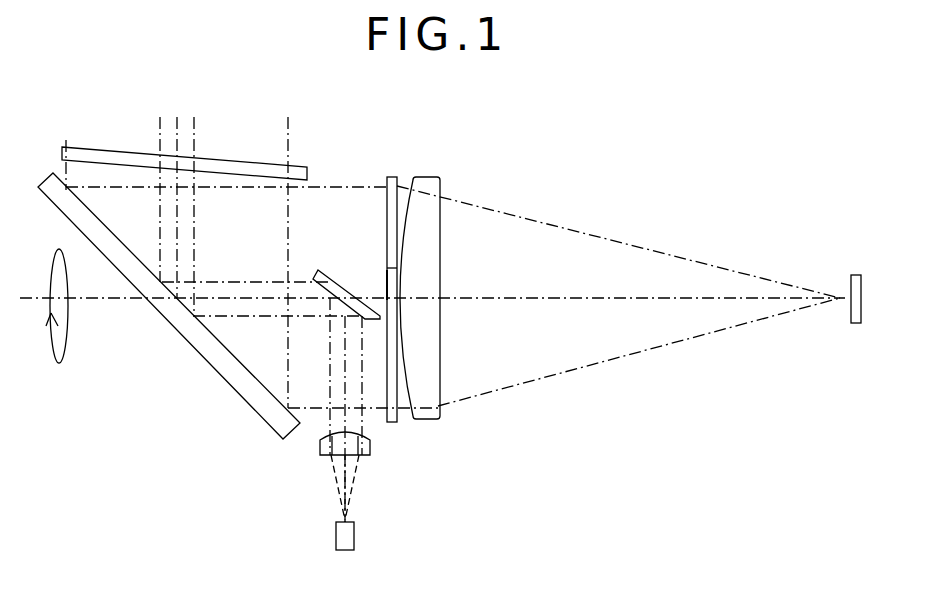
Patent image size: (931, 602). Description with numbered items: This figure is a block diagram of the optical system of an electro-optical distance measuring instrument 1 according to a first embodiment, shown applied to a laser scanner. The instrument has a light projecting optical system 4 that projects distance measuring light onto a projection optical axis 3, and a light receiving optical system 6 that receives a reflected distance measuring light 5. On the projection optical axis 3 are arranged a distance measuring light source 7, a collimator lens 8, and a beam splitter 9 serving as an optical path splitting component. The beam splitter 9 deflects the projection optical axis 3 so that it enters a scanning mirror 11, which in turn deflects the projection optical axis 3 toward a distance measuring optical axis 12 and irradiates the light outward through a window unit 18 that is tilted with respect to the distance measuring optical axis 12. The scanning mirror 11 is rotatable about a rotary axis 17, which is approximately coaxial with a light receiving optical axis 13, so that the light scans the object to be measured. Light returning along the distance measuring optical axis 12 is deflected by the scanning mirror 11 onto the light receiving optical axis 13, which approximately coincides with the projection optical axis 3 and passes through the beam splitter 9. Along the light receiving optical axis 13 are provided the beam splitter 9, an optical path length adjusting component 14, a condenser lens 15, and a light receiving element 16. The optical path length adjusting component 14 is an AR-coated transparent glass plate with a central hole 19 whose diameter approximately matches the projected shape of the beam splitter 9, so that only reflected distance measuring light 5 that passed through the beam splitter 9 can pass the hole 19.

The electro-optical distance measuring instrument 1 is at (550, 109).
The projection optical axis 3 is at (345, 340).
The light projecting optical system 4 is at (313, 478).
The reflected distance measuring light 5 is at (610, 238).
The light receiving optical system 6 is at (472, 425).
The distance measuring light source 7 is at (357, 537).
The collimator lens 8 is at (320, 442).
The beam splitter 9 is at (336, 270).
The scanning mirror 11 is at (197, 353).
The distance measuring optical axis 12 is at (176, 131).
The light receiving optical axis 13 is at (505, 298).
The optical path length adjusting component 14 is at (392, 177).
The condenser lens 15 is at (428, 178).
The light receiving element 16 is at (855, 275).
The rotary axis 17 is at (22, 298).
The window unit 18 is at (230, 159).
The hole 19 is at (388, 283).